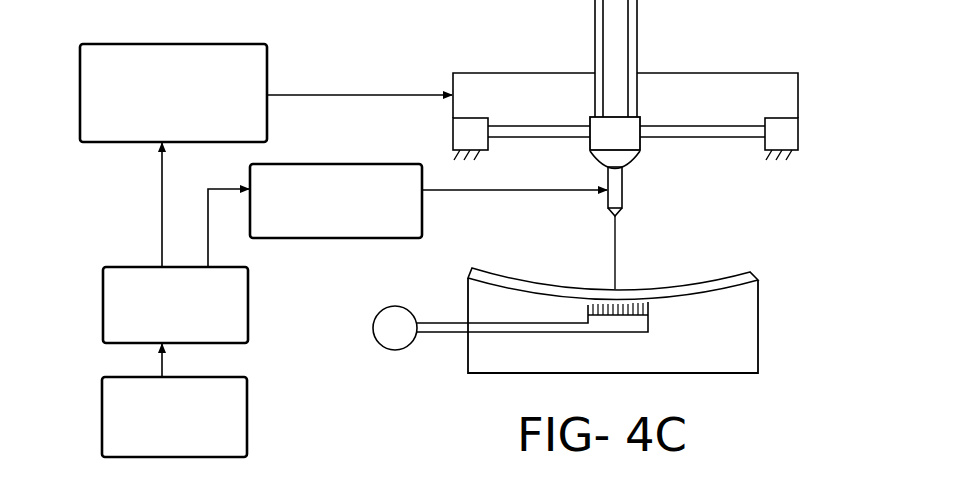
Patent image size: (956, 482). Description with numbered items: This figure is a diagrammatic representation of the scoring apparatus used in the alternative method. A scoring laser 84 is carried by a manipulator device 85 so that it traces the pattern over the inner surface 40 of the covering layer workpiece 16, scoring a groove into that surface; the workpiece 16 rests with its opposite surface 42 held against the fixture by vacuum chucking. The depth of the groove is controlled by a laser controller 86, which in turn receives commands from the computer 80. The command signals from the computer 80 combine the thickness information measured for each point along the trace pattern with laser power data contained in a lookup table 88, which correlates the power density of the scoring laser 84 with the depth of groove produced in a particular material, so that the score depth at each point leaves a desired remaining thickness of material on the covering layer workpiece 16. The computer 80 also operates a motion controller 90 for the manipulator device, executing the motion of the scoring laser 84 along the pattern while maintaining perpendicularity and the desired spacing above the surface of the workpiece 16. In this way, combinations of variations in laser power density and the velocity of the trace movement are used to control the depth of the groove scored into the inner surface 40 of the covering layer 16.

The motion controller 90 is at (170, 44).
The laser controller 86 is at (318, 238).
The computer 80 is at (248, 324).
The lookup table 88 is at (247, 410).
The manipulator device 85 is at (804, 104).
The scoring laser 84 is at (623, 183).
The workpiece 16 is at (708, 279).
The inner surface 40 is at (548, 290).
The opposite surface 42 is at (495, 284).